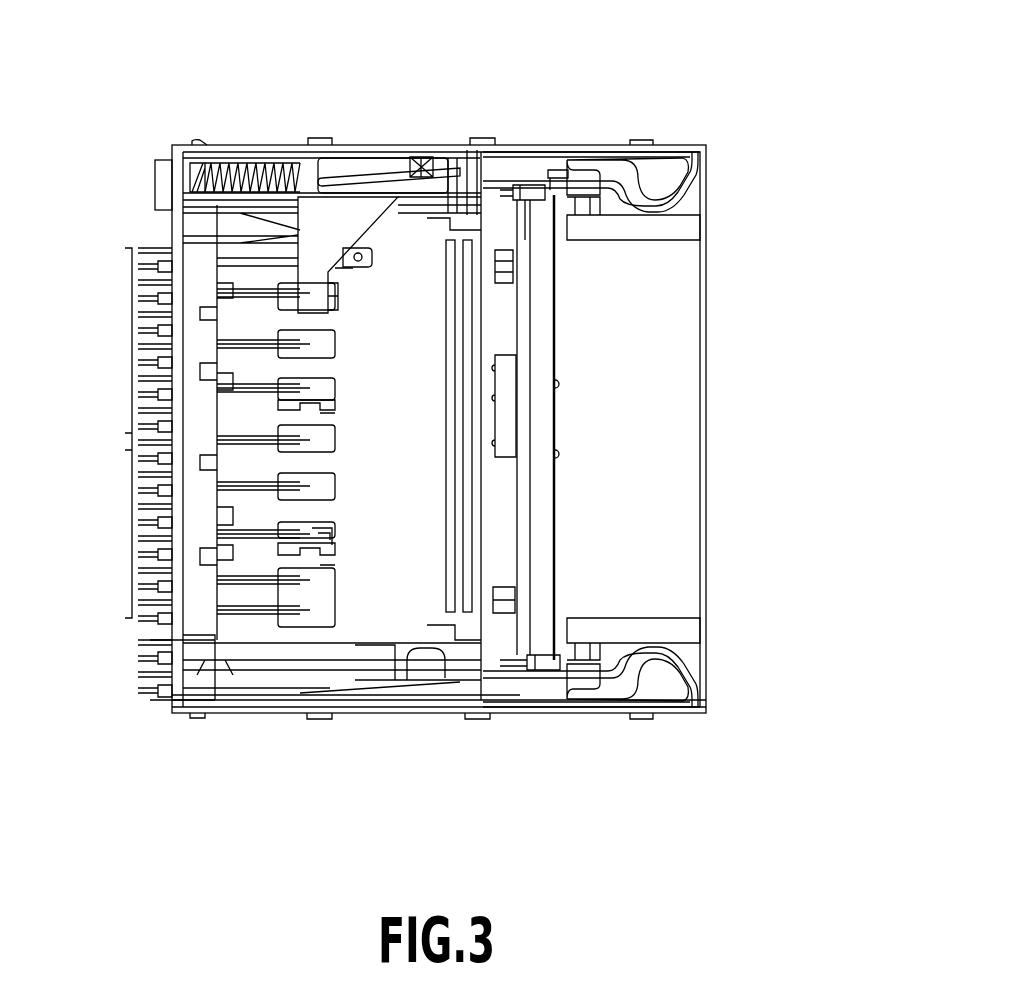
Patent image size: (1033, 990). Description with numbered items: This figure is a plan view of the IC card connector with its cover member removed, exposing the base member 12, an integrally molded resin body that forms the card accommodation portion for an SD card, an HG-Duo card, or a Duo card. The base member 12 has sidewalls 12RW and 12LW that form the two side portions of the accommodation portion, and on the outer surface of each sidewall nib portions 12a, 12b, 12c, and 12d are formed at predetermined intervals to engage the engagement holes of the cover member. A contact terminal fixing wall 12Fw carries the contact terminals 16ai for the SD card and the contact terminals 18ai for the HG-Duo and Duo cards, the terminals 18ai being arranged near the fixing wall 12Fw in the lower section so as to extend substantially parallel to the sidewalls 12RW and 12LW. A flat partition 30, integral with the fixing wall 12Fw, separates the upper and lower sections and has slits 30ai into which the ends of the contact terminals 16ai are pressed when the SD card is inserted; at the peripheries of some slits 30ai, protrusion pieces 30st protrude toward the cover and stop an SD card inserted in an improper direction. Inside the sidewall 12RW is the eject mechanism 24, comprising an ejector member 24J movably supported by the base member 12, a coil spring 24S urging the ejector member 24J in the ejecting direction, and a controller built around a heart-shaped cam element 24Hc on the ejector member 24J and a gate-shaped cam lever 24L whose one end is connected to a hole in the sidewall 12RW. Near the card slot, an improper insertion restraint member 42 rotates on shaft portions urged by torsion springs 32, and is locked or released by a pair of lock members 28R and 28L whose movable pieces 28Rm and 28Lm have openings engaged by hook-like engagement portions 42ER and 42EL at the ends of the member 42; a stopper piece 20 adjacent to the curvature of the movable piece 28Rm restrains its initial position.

The base member 12 is at (672, 467).
The nib portion 12a is at (197, 138).
The nib portion 12b is at (318, 137).
The nib portion 12c is at (482, 137).
The nib portion 12d is at (645, 138).
The contact terminal fixing wall 12Fw is at (172, 168).
The sidewall 12RW is at (695, 148).
The sidewall 12LW is at (690, 706).
The contact terminals 16ai is at (116, 462).
The contact terminals 18ai is at (109, 479).
The stopper piece 20 is at (600, 228).
The eject mechanism 24 is at (389, 122).
The coil spring 24S is at (238, 160).
The ejector member 24J is at (343, 210).
The cam lever 24L is at (400, 175).
The cam element 24Hc is at (422, 162).
The lock member 28R is at (688, 188).
The lock member 28L is at (688, 672).
The movable piece 28Rm is at (598, 205).
The movable piece 28Lm is at (588, 657).
The partition 30 is at (405, 615).
The slits 30ai is at (362, 256).
The protrusion pieces 30st is at (353, 268).
The torsion springs 32 is at (558, 170).
The improper insertion restraint member 42 is at (548, 345).
The engagement portion 42ER is at (535, 183).
The engagement portion 42EL is at (540, 672).